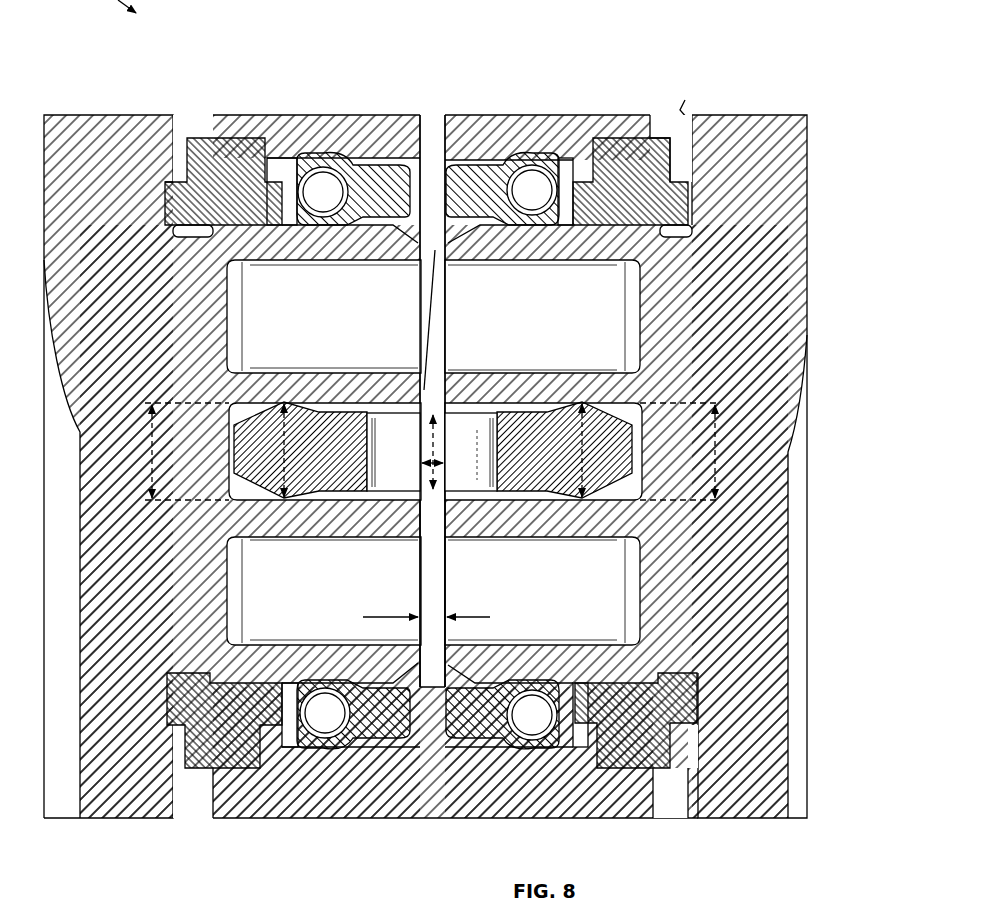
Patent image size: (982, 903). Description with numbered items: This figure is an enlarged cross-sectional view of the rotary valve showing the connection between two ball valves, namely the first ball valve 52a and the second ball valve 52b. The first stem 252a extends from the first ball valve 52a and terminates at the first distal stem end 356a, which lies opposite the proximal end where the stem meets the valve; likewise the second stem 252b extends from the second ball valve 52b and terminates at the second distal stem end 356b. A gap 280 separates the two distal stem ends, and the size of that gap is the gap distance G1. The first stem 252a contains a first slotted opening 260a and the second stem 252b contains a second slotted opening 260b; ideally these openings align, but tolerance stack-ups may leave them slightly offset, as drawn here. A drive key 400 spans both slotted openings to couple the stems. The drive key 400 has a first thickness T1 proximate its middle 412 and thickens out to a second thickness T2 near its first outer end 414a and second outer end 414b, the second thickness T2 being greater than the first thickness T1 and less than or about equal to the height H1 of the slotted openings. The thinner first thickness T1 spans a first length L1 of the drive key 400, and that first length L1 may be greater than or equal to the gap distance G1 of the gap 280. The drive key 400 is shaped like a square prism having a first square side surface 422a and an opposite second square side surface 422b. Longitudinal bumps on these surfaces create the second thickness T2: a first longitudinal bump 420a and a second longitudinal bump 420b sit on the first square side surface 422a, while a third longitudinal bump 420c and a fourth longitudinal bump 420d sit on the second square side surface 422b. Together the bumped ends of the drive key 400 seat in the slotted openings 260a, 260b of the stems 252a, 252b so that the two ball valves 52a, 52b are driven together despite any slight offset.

The first ball valve 52a is at (80, 128).
The second ball valve 52b is at (770, 130).
The first stem 252a is at (290, 235).
The second stem 252b is at (553, 170).
The middle 412 is at (437, 396).
The first longitudinal bump 420a is at (236, 430).
The second longitudinal bump 420b is at (694, 455).
The third longitudinal bump 420c is at (236, 450).
The fourth longitudinal bump 420d is at (694, 472).
The first square side surface 422a is at (440, 390).
The second square side surface 422b is at (418, 497).
The first outer end 414a is at (232, 437).
The second outer end 414b is at (632, 447).
The first slotted opening 260a is at (311, 445).
The second slotted opening 260b is at (665, 455).
The drive key 400 is at (498, 455).
The gap 280 is at (441, 575).
The first distal stem end 356a is at (420, 687).
The second distal stem end 356b is at (445, 687).
The height of the slotted openings H1 is at (152, 427).
The first thickness T1 is at (430, 445).
The second thickness T2 is at (285, 445).
The first length L1 is at (433, 468).
The gap distance G1 is at (414, 618).